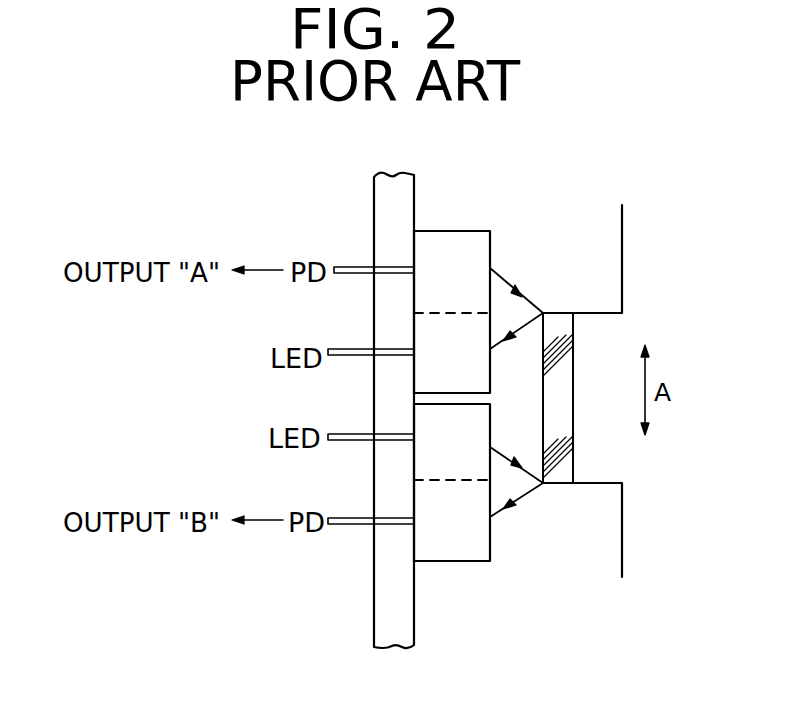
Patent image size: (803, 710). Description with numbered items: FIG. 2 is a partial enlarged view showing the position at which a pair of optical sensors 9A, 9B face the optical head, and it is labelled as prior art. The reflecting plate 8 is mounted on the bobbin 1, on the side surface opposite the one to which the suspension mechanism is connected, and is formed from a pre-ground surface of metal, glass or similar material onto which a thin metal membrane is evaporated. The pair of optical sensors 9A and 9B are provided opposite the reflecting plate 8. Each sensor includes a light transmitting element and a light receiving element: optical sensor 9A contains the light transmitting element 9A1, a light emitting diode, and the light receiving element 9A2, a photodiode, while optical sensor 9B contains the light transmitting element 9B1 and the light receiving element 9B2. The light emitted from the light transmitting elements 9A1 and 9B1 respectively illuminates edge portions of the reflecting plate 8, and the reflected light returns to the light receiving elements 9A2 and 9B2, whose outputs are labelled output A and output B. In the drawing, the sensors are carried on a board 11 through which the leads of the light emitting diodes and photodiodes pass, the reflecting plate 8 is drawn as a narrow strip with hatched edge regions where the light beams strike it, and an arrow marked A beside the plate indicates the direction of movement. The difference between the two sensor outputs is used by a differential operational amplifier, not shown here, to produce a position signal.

The bobbin 1 is at (597, 342).
The reflecting plate 8 is at (561, 318).
The optical sensor 9A is at (455, 230).
The light transmitting element 9A1 is at (430, 371).
The light receiving element 9A2 is at (480, 245).
The optical sensor 9B is at (459, 564).
The light transmitting element 9B1 is at (430, 453).
The light receiving element 9B2 is at (478, 534).
The printed circuit board 11 is at (390, 607).